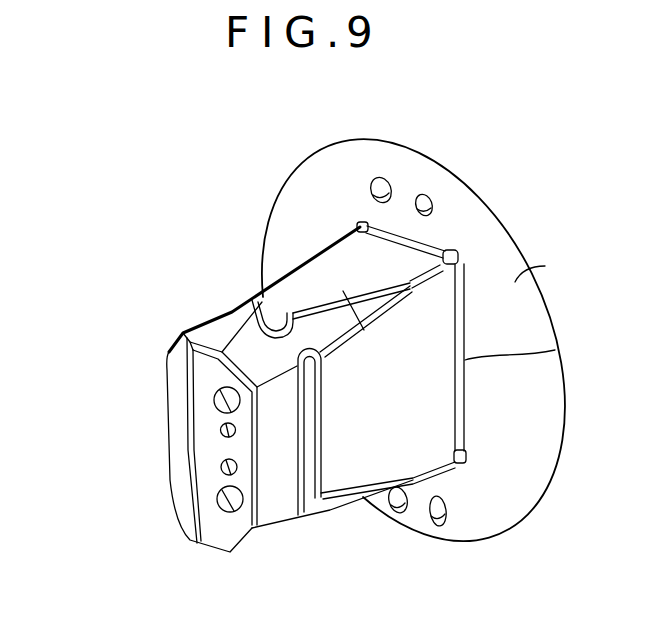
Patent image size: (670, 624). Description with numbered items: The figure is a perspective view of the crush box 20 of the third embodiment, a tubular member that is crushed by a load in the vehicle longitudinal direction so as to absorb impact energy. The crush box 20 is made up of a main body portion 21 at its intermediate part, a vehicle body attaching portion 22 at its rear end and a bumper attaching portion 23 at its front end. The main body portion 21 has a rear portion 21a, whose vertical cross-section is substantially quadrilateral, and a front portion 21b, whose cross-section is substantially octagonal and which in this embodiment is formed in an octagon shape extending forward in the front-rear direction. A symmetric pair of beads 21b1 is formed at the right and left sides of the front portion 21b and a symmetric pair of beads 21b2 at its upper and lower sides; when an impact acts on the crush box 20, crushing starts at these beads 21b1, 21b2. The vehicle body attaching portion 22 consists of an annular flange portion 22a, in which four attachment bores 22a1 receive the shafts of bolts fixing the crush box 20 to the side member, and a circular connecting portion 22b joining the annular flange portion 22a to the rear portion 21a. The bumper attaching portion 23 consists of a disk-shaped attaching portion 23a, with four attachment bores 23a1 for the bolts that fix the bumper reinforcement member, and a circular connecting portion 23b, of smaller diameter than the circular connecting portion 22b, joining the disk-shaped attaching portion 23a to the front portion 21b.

The crush box 20 is at (495, 212).
The main body portion 21 is at (427, 447).
The rear portion 21a is at (460, 253).
The front portion 21b is at (292, 272).
The beads 21b1 is at (307, 427).
The beads 21b2 is at (278, 300).
The vehicle body attaching portion 22 is at (467, 418).
The annular flange portion 22a is at (523, 273).
The attachment bores 22a1 is at (428, 193).
The circular connecting portion 22b is at (463, 353).
The bumper attaching portion 23 is at (247, 543).
The disk-shaped attaching portion 23a is at (197, 392).
The attachment bores 23a1 is at (224, 461).
The circular connecting portion 23b is at (181, 336).